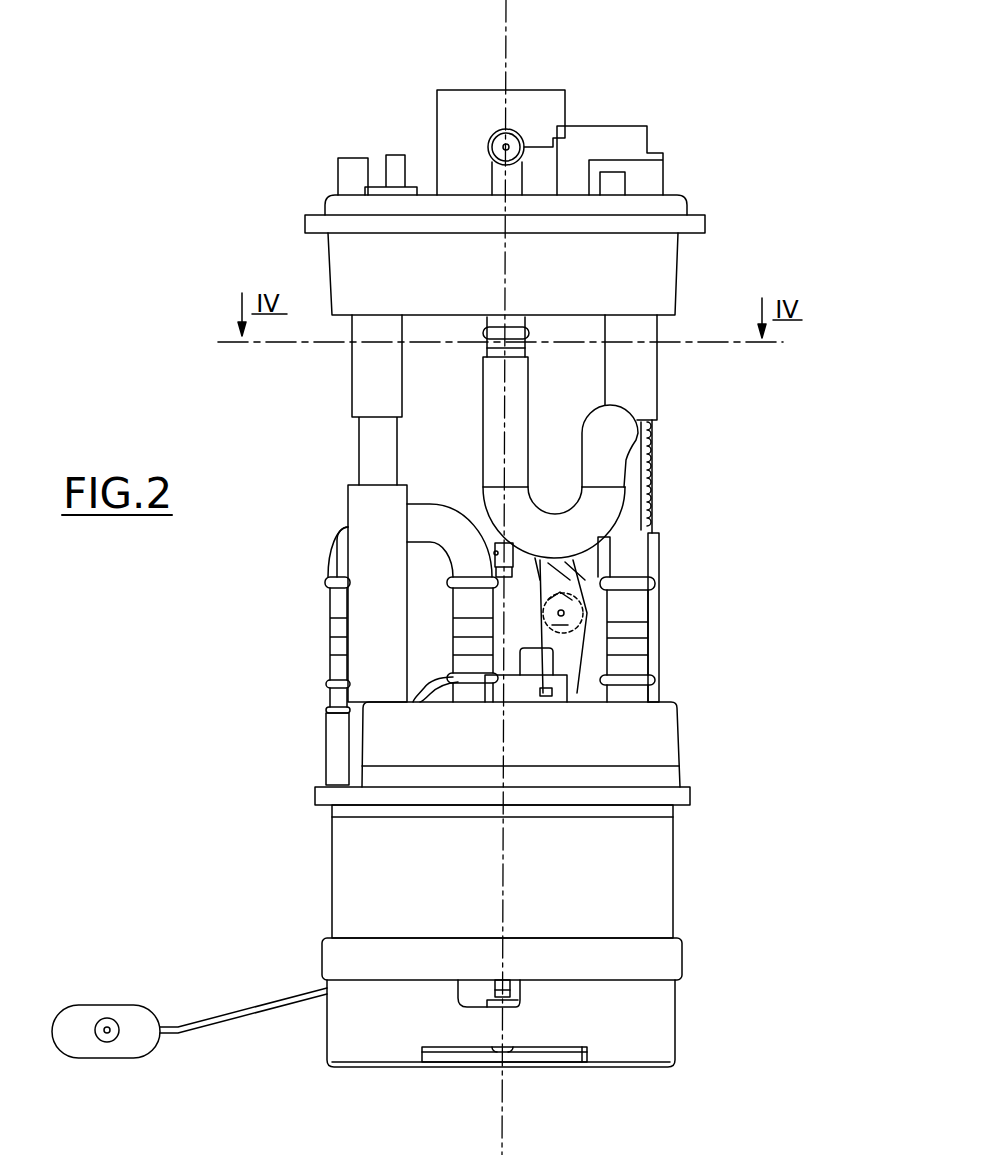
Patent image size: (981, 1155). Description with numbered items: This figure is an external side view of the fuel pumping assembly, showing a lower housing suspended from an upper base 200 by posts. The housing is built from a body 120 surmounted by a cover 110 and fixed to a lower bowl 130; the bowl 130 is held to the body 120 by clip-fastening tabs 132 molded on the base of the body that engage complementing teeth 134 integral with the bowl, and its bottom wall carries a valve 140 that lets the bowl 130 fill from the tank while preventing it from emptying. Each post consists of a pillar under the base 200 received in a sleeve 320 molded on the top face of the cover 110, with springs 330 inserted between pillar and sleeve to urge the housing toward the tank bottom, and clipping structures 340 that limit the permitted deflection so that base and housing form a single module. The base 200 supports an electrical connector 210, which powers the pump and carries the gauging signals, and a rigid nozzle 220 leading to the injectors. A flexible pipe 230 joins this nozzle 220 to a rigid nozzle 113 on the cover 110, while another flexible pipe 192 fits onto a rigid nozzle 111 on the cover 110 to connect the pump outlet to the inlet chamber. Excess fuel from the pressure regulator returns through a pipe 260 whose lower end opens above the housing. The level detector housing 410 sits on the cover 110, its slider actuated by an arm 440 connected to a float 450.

The cover 110 is at (647, 750).
The rigid nozzle 111 is at (445, 703).
The rigid nozzle 113 is at (635, 648).
The body 120 is at (635, 893).
The lower bowl 130 is at (330, 1030).
The clip-fastening tabs 132 is at (456, 975).
The teeth 134 is at (513, 993).
The valve 140 is at (467, 1060).
The flexible pipe 192 is at (453, 517).
The base 200 is at (342, 262).
The electrical connector 210 is at (467, 103).
The rigid nozzle 220 is at (526, 144).
The flexible pipe 230 is at (493, 387).
The pipe 260 is at (460, 598).
The sleeve 320 is at (378, 662).
The springs 330 is at (373, 437).
The clipping structures 340 is at (650, 472).
The housing 410 is at (575, 703).
The arm 440 is at (235, 1010).
The float 450 is at (127, 1048).